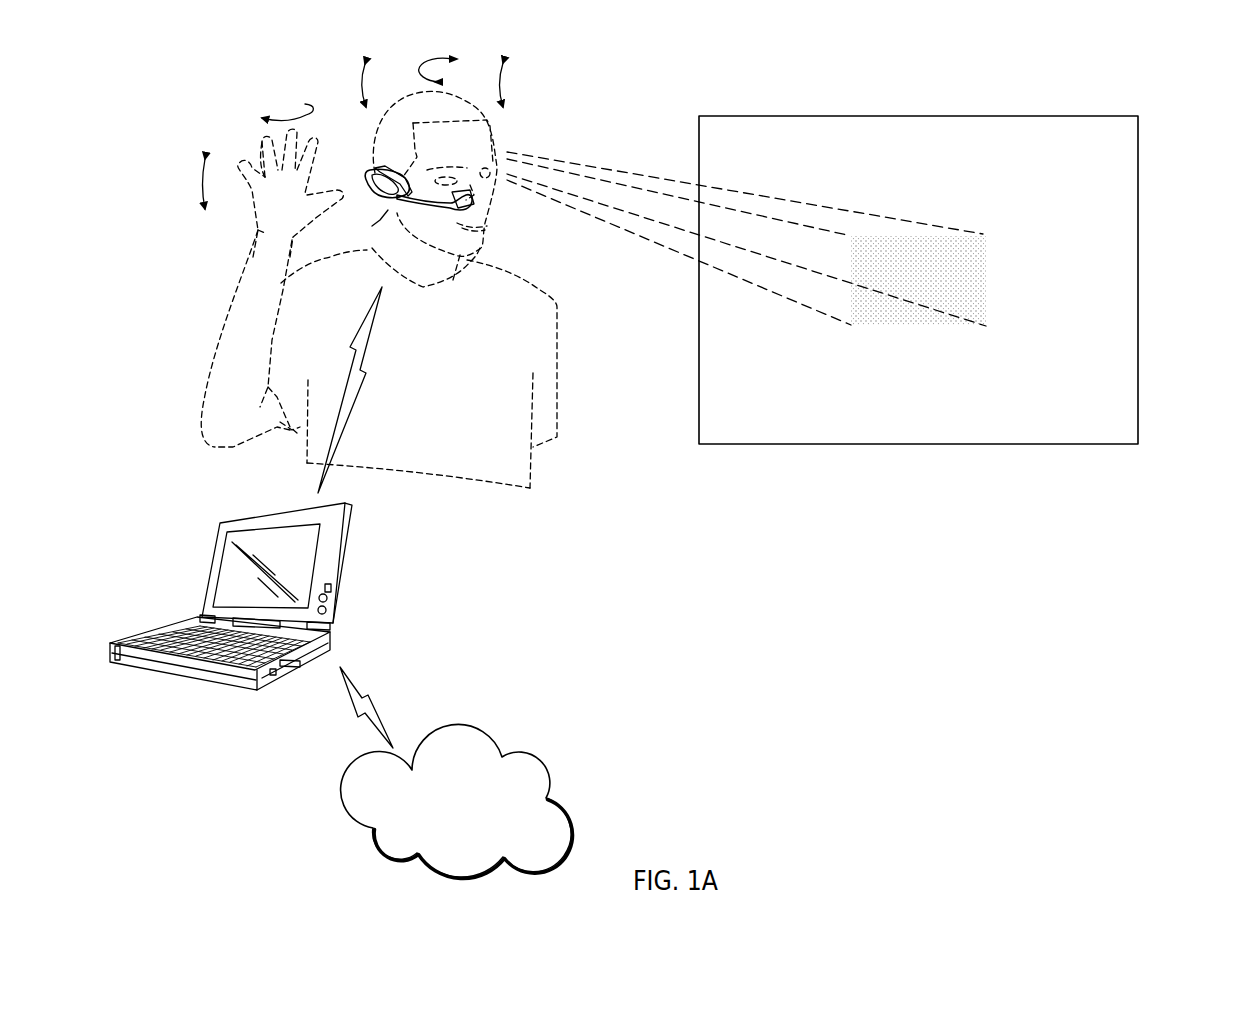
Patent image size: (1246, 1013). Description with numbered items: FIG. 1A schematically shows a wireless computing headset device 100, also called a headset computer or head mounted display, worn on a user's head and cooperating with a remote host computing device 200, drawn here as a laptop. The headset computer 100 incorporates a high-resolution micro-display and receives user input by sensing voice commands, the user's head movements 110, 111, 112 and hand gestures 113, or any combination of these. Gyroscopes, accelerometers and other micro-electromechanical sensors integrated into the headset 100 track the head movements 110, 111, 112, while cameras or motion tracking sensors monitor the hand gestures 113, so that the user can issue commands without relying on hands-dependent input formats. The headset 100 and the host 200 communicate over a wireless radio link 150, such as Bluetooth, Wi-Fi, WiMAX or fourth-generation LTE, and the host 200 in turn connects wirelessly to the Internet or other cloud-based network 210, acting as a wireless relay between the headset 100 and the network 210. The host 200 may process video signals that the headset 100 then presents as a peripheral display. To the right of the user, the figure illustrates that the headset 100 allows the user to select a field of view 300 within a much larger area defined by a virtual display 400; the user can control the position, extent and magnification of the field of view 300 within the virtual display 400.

The wireless computing headset device 100 is at (390, 212).
The head movement 110 is at (432, 80).
The head movement 111 is at (503, 90).
The head movement 112 is at (357, 84).
The hand gesture 113 is at (203, 184).
The wireless radio link 150 is at (342, 415).
The host computing device 200 is at (345, 562).
The network 210 is at (541, 782).
The field of view 300 is at (986, 277).
The virtual display 400 is at (797, 445).